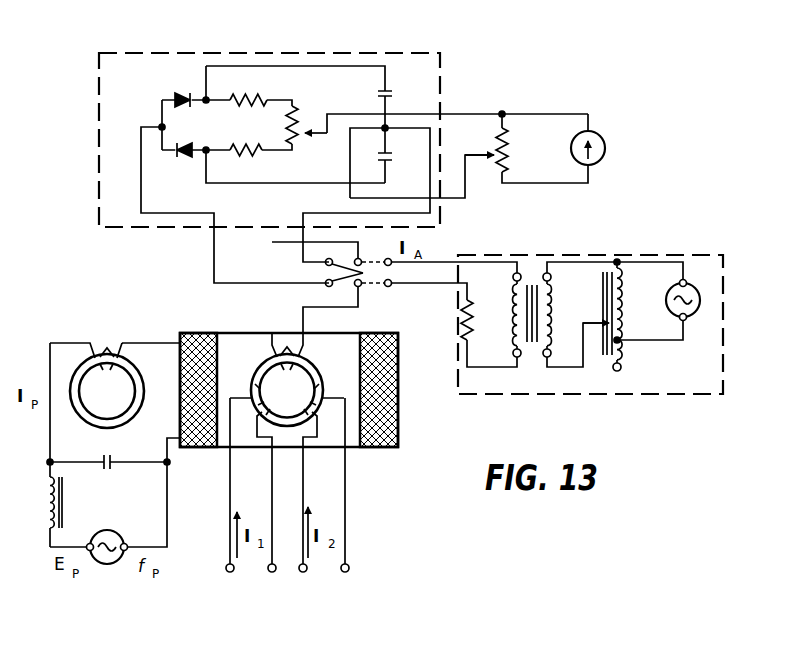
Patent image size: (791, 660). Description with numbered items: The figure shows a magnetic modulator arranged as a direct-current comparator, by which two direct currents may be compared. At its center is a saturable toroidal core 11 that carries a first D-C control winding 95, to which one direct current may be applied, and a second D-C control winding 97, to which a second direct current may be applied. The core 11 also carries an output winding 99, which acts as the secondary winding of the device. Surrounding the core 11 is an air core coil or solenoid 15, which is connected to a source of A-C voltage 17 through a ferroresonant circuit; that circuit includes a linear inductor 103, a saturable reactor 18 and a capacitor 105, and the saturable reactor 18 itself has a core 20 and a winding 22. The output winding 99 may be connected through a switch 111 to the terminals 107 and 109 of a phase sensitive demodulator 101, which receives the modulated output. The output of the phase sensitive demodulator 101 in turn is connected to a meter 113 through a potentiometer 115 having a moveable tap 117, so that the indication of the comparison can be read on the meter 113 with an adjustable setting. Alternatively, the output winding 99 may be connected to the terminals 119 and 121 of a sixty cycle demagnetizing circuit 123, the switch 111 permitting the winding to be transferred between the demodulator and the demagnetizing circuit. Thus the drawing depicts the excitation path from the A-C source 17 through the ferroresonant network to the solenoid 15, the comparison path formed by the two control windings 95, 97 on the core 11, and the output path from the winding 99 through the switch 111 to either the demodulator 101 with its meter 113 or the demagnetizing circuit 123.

The phase sensitive demodulator 101 is at (440, 53).
The meter 113 is at (606, 148).
The potentiometer 115 is at (497, 150).
The moveable tap 117 is at (493, 165).
The terminal 107 is at (331, 259).
The terminal 109 is at (326, 285).
The switch 111 is at (331, 287).
The terminal 119 is at (392, 265).
The terminal 121 is at (392, 287).
The 60 cycle demagnetizing circuit 123 is at (723, 264).
The saturable reactor 18 is at (116, 411).
The winding 22 is at (124, 349).
The core 20 is at (140, 413).
The capacitor 105 is at (112, 455).
The linear inductor 103 is at (63, 503).
The source of A-C voltage 17 is at (103, 565).
The air core coil or solenoid 15 is at (398, 403).
The saturable toroidal core 11 is at (316, 372).
The output winding 99 is at (272, 354).
The first D-C control winding 95 is at (255, 409).
The second D-C control winding 97 is at (318, 411).